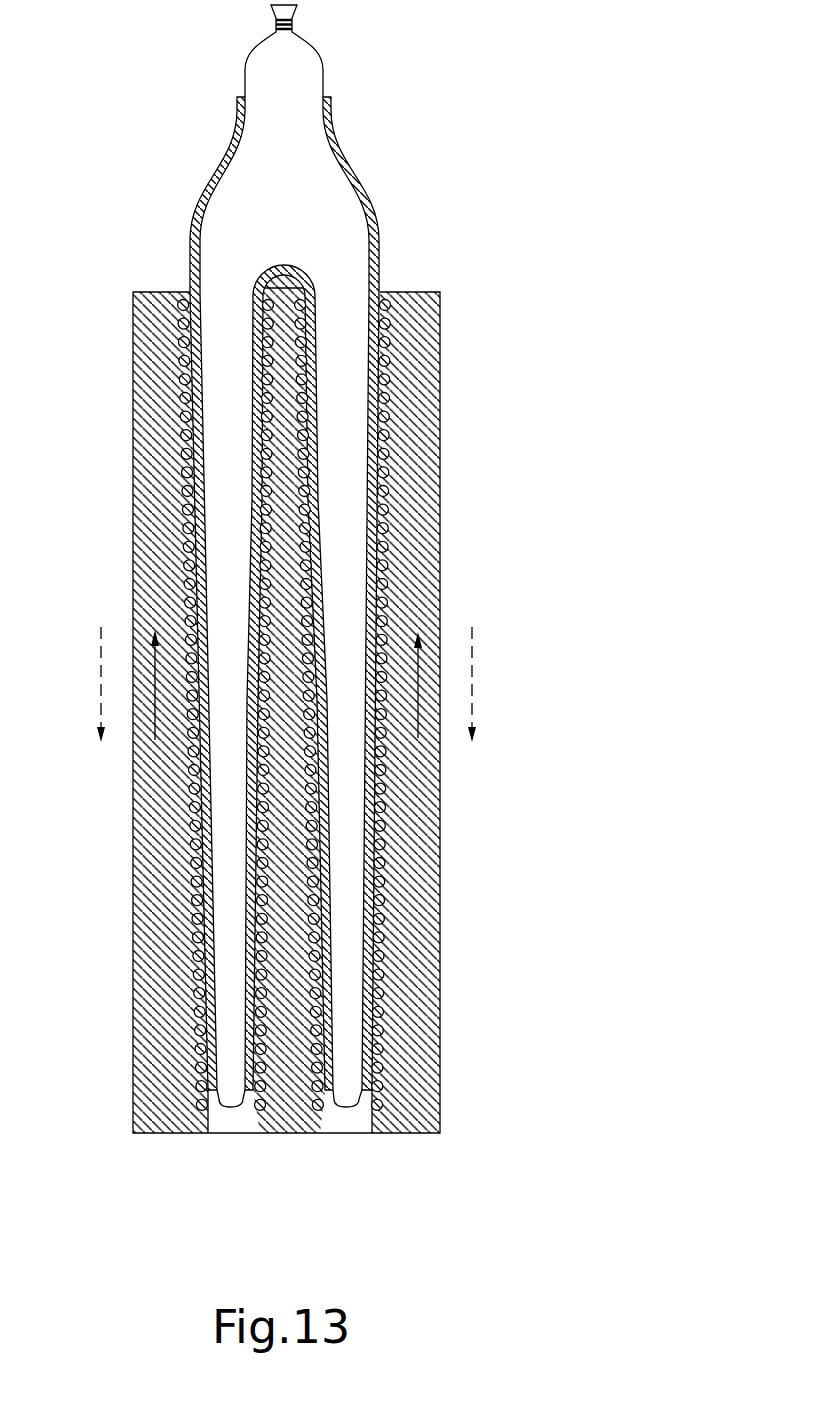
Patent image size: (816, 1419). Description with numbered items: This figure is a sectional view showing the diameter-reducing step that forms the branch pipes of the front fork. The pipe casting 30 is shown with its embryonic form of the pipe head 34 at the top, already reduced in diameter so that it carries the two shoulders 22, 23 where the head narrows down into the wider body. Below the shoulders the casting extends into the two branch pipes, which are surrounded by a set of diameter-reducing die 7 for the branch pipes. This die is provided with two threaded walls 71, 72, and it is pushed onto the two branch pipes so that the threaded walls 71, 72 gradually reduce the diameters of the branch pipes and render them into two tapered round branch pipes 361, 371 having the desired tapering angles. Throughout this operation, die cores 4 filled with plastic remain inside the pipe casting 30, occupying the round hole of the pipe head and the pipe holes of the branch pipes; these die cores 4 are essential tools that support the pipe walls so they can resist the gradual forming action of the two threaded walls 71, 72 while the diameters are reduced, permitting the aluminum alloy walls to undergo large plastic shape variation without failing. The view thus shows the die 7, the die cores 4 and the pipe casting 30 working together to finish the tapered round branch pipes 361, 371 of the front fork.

The die core 4 is at (293, 220).
The diameter-reducing die 7 is at (407, 873).
The shoulder 22 is at (213, 178).
The shoulder 23 is at (350, 173).
The pipe casting 30 is at (253, 547).
The embryonic form of the pipe head 34 is at (331, 98).
The threaded wall 71 is at (255, 1113).
The threaded wall 72 is at (328, 1122).
The tapered round branch pipe 361 is at (213, 1122).
The tapered round branch pipe 371 is at (367, 1122).